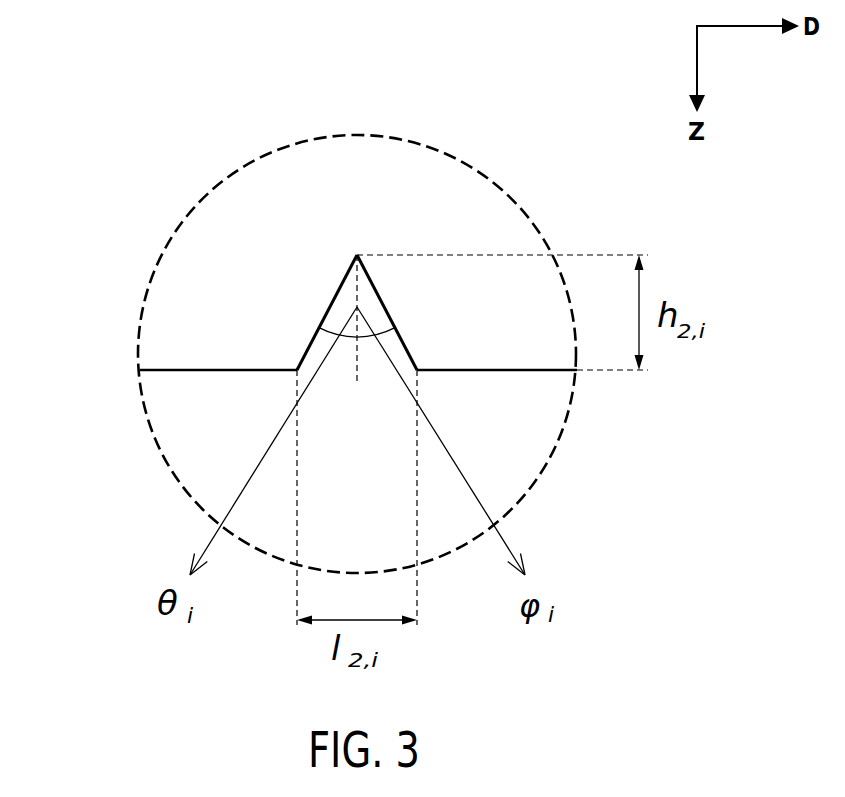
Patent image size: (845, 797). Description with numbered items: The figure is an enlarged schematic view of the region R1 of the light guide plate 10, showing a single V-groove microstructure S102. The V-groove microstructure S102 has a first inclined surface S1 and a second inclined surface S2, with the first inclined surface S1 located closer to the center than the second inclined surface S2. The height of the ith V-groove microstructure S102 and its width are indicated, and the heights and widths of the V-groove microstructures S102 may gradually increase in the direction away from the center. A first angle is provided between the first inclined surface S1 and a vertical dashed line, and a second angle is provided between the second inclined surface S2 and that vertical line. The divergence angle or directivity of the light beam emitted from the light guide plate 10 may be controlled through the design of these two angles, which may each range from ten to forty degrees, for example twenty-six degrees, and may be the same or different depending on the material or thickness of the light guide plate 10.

The light guide plate 10 is at (187, 298).
The region R1 is at (190, 217).
The first inclined surface S1 is at (327, 312).
The second inclined surface S2 is at (387, 312).
The V-groove microstructure S102 is at (355, 198).